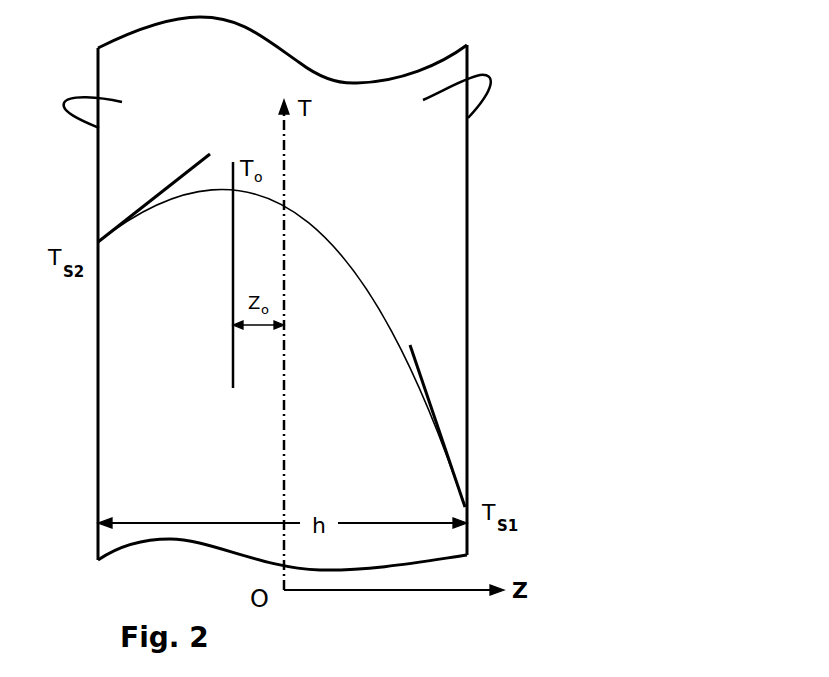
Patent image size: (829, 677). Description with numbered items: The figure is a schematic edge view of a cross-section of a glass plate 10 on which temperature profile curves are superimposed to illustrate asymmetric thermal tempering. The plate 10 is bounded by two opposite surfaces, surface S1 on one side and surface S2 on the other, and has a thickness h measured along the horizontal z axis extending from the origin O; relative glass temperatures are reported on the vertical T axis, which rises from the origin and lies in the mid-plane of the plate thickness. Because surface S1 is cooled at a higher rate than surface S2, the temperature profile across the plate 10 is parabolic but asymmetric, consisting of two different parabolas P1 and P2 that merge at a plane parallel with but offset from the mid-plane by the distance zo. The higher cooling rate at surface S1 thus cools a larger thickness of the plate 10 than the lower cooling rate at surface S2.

The glass plate 10 is at (490, 192).
The surface S1 of the plate S1 is at (441, 97).
The surface S2 of the plate S2 is at (110, 111).
The parabola P1 is at (382, 300).
The parabola P2 is at (153, 215).